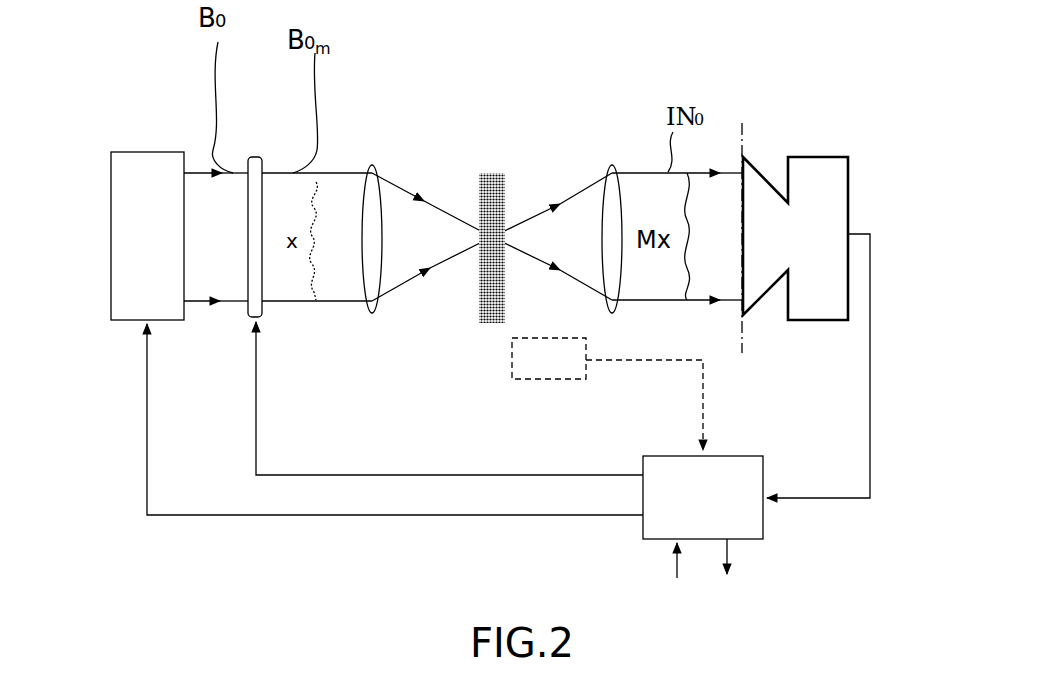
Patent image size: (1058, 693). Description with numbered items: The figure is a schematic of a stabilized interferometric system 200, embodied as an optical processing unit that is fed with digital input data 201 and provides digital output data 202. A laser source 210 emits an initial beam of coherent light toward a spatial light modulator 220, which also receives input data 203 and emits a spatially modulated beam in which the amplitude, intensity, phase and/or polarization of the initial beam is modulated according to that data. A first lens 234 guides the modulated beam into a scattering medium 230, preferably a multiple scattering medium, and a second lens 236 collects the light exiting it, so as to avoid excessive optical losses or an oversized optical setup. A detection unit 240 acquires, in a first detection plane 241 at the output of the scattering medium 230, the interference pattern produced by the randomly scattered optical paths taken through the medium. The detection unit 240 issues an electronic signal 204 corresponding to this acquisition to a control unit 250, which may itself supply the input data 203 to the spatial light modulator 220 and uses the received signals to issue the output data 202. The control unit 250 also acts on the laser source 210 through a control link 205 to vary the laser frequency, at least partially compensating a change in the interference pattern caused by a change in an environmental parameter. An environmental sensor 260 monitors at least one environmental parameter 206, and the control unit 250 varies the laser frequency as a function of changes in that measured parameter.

The stabilized interferometric system 200 is at (89, 30).
The laser source 210 is at (143, 150).
The spatial light modulator 220 is at (258, 155).
The scattering medium 230 is at (493, 170).
The lens 234 is at (372, 165).
The lens 236 is at (617, 165).
The detection unit 240 is at (815, 155).
The first detection plane 241 is at (742, 120).
The control unit 250 is at (765, 518).
The environmental sensor 260 is at (512, 360).
The digital input data 201 is at (674, 578).
The digital output data 202 is at (727, 576).
The input data 203 is at (305, 475).
The electronic signal 204 is at (872, 343).
The source control signal 205 is at (308, 518).
The environmental parameter 206 is at (703, 398).